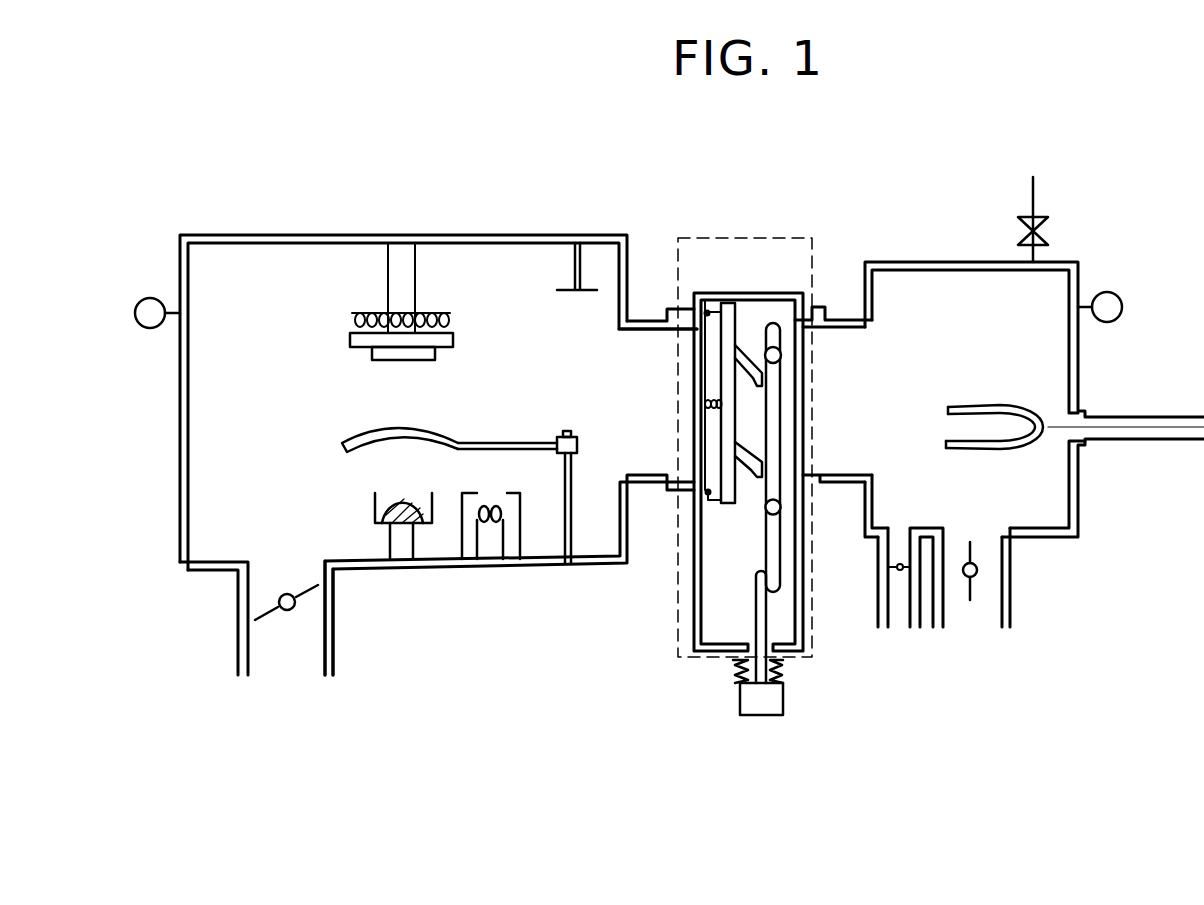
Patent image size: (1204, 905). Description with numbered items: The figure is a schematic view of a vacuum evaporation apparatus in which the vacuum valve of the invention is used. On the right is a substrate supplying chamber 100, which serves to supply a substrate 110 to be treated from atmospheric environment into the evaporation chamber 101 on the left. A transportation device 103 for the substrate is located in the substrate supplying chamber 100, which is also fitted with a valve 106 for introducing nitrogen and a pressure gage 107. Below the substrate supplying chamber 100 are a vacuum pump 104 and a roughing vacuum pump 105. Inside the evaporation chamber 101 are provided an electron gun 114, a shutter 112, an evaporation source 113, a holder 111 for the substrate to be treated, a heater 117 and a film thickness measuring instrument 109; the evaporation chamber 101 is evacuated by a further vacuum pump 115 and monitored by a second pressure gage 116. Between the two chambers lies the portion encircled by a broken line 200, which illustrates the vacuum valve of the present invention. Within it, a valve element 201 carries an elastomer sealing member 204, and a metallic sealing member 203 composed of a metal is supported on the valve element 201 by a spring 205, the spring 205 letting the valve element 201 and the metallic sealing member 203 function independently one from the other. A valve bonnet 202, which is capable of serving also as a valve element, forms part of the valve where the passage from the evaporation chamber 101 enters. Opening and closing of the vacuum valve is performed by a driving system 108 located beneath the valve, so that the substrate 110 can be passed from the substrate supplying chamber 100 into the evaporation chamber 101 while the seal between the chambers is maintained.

The substrate supplying chamber 100 is at (928, 262).
The evaporation chamber 101 is at (472, 236).
The transportation device 103 is at (985, 405).
The vacuum pump 104 is at (992, 590).
The roughing vacuum pump 105 is at (893, 585).
The valve for introducing N2 106 is at (1045, 220).
The pressure gage 107 is at (1112, 292).
The driving system 108 is at (768, 716).
The film thickness measuring instrument 109 is at (578, 262).
The substrate 110 is at (528, 392).
The holder 111 is at (350, 335).
The shutter 112 is at (350, 432).
The evaporation source 113 is at (380, 493).
The electron gun 114 is at (540, 565).
The vacuum pump 115 is at (333, 648).
The pressure gage 116 is at (150, 298).
The heater 117 is at (372, 316).
The broken line 200 is at (723, 238).
The valve element 201 is at (733, 330).
The valve bonnet 202 is at (670, 318).
The metallic sealing member 203 is at (698, 438).
The elastomer sealing member 204 is at (707, 311).
The spring 205 is at (704, 403).